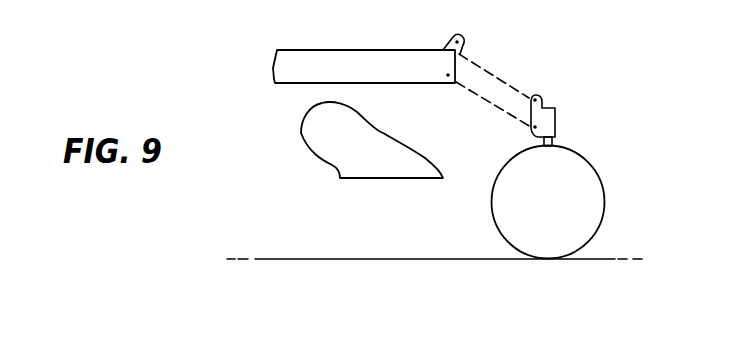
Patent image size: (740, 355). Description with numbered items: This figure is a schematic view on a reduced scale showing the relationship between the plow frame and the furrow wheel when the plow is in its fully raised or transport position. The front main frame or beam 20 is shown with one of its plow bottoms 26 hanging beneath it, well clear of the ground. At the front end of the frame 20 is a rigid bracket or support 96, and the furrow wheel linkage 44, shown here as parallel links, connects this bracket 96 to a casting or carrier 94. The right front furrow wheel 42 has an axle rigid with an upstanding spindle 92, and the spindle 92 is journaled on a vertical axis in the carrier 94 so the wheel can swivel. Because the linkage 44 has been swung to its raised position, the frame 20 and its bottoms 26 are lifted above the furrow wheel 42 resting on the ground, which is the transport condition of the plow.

The front main frame 20 is at (293, 65).
The plow bottoms 26 is at (322, 140).
The right front furrow wheel 42 is at (603, 222).
The furrow wheel linkage 44 is at (495, 74).
The spindle 92 is at (553, 143).
The carrier 94 is at (557, 121).
The bracket 96 is at (448, 57).